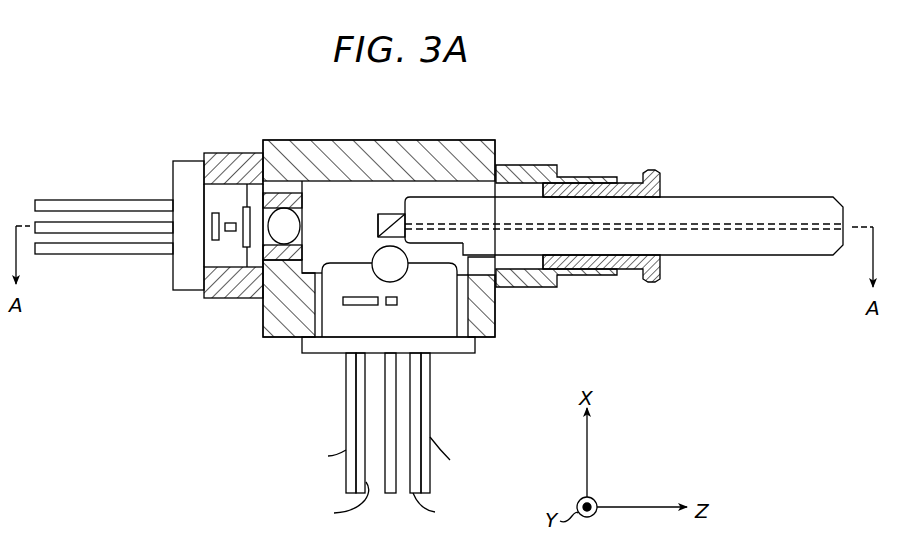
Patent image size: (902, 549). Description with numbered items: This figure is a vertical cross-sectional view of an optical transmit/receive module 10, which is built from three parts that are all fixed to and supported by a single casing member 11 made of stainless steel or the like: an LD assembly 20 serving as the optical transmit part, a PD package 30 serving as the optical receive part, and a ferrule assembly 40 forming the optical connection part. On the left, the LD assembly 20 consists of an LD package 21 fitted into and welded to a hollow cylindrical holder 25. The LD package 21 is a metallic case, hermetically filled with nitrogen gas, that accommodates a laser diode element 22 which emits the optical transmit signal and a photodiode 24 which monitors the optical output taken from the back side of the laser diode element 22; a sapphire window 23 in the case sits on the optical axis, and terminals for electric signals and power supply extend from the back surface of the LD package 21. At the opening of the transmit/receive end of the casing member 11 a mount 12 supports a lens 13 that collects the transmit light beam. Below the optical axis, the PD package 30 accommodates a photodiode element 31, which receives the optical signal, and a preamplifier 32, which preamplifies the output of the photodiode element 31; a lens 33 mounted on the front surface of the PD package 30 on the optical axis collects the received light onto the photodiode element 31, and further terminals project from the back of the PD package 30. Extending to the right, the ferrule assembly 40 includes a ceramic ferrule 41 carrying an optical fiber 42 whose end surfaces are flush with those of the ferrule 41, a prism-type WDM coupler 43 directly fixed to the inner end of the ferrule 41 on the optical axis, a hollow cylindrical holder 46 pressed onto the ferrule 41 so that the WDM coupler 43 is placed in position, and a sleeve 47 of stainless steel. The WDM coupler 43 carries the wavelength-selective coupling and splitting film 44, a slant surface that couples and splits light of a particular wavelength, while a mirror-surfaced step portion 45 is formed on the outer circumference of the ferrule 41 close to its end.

The optical transmit/receive module 10 is at (162, 102).
The casing member 11 is at (460, 140).
The mount 12 is at (277, 193).
The lens 13 is at (300, 223).
The LD assembly 20 is at (157, 170).
The LD package 21 is at (188, 161).
The laser diode element 22 is at (232, 234).
The window 23 is at (251, 243).
The photodiode 24 is at (207, 228).
The holder 25 is at (237, 153).
The PD package 30 is at (477, 347).
The photodiode element 31 is at (387, 306).
The preamplifier 32 is at (357, 306).
The lens 33 is at (403, 277).
The ferrule assembly 40 is at (677, 263).
The ferrule 41 is at (726, 197).
The optical fiber 42 is at (793, 223).
The WDM coupler 43 is at (395, 215).
The wavelength-selective coupling and splitting film 44 is at (378, 222).
The step portion 45 is at (435, 247).
The holder 46 is at (645, 172).
The sleeve 47 is at (527, 165).